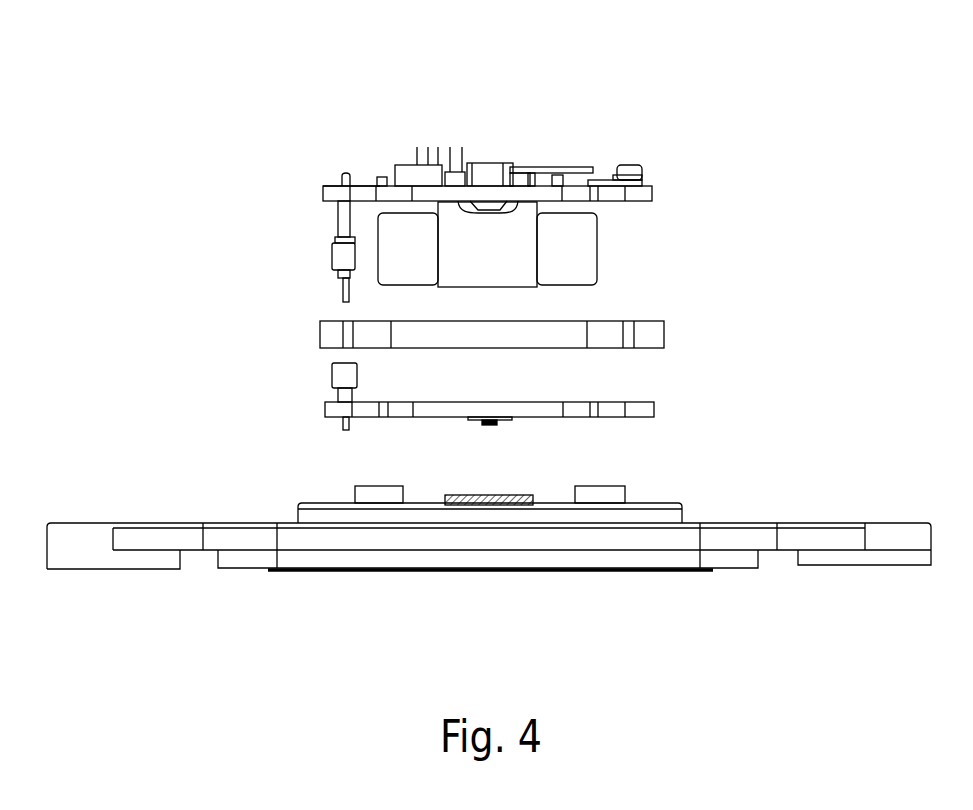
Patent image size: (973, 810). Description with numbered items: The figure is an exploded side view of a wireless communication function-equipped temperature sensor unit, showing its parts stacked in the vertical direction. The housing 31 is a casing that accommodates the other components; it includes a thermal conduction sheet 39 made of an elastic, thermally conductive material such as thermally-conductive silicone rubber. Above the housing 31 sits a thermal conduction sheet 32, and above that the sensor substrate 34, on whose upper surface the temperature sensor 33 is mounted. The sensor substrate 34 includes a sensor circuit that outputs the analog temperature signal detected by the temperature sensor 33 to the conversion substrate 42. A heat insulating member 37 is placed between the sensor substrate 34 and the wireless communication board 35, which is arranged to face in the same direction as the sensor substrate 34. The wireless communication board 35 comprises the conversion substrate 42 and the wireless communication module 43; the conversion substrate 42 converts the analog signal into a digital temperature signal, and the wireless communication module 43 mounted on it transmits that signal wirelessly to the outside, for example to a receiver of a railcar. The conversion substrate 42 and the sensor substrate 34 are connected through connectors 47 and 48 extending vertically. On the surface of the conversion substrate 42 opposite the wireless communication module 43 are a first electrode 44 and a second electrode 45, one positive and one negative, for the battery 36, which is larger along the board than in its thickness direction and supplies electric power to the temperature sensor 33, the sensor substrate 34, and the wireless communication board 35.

The housing 31 is at (57, 523).
The thermal conduction sheet 32 is at (473, 495).
The temperature sensor 33 is at (497, 422).
The sensor substrate 34 is at (655, 403).
The wireless communication board 35 is at (318, 187).
The battery 36 is at (406, 235).
The heat insulating member 37 is at (665, 332).
The thermal conduction sheet 39 is at (328, 572).
The conversion substrate 42 is at (652, 185).
The wireless communication module 43 is at (630, 165).
The first electrode 44 is at (483, 208).
The second electrode 45 is at (527, 239).
The connector 47 is at (332, 255).
The connector 48 is at (332, 368).